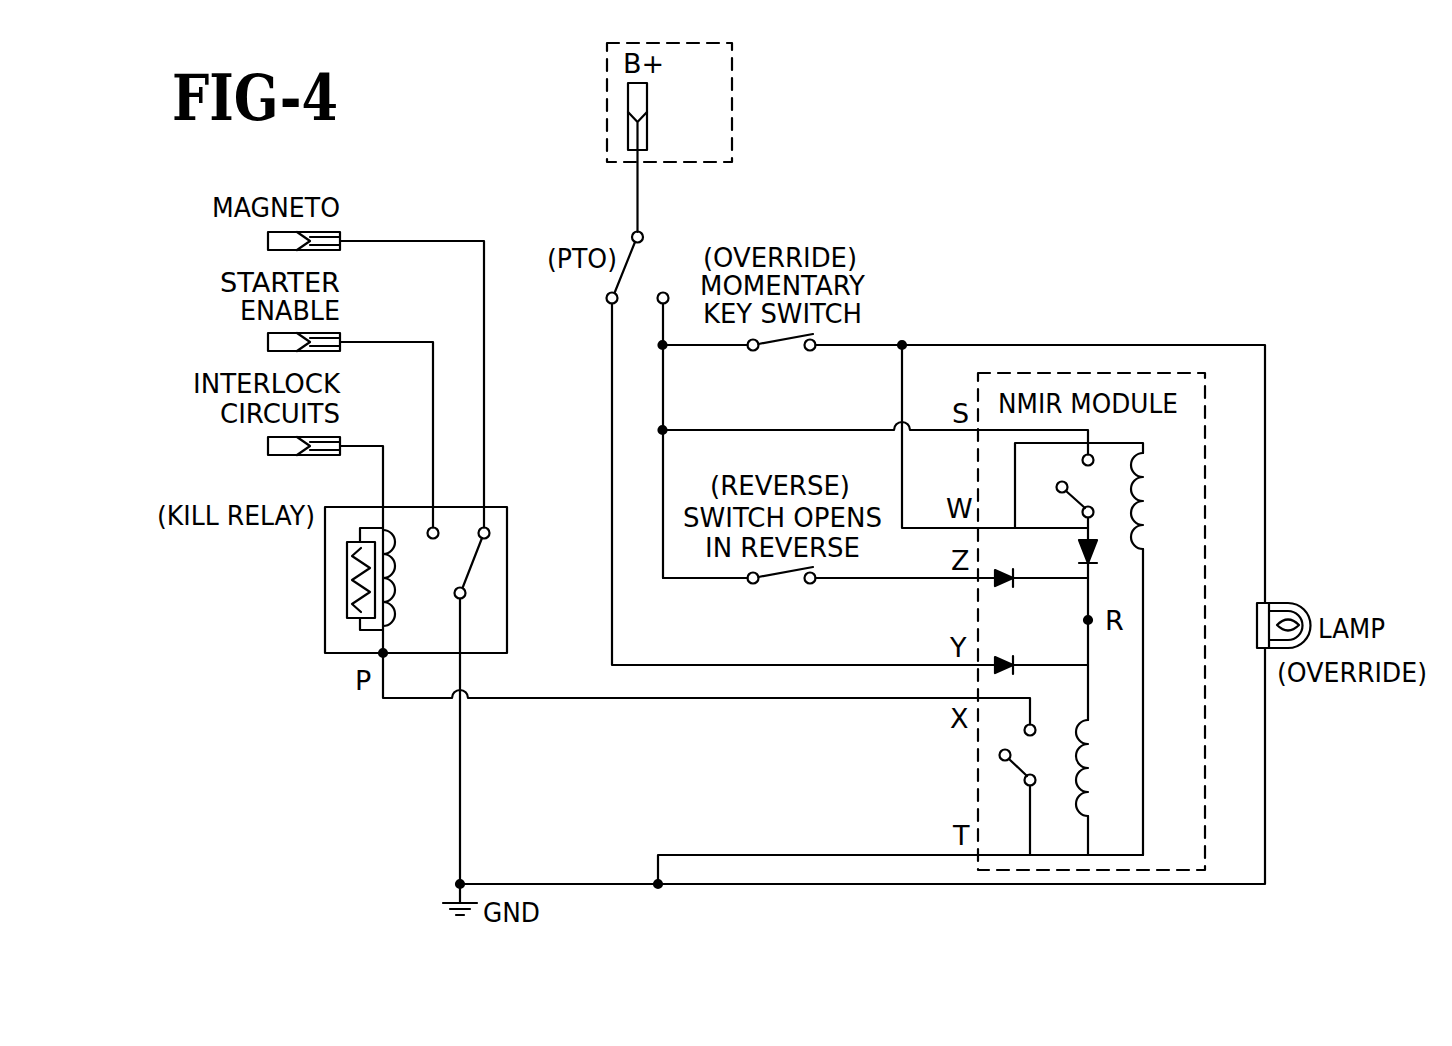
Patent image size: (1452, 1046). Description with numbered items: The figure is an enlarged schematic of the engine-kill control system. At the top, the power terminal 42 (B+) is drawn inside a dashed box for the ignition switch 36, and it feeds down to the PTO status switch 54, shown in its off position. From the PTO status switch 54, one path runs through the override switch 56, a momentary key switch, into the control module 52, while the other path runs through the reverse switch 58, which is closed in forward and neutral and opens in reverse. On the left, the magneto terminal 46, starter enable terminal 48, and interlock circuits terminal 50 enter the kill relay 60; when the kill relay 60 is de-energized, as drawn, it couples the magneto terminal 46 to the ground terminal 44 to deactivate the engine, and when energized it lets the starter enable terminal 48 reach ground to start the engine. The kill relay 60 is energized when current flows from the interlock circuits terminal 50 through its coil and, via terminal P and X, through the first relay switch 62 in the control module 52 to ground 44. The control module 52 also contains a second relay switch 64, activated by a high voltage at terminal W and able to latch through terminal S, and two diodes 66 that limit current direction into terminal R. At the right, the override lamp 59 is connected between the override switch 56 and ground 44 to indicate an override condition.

The ignition switch 36 is at (732, 62).
The power terminal 42 is at (647, 95).
The ground terminal 44 is at (487, 884).
The magneto terminal 46 is at (268, 241).
The starter enable terminal 48 is at (268, 342).
The interlock circuits terminal 50 is at (268, 446).
The control module 52 is at (1105, 372).
The PTO status switch 54 is at (634, 265).
The override switch 56 is at (787, 336).
The reverse switch 58 is at (787, 582).
The override lamp 59 is at (1290, 603).
The kill relay 60 is at (325, 578).
The first relay switch 62 is at (1088, 766).
The second relay switch 64 is at (1143, 490).
The diodes 66 is at (1015, 580).